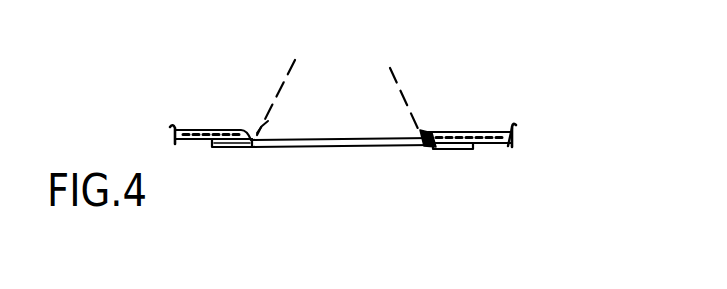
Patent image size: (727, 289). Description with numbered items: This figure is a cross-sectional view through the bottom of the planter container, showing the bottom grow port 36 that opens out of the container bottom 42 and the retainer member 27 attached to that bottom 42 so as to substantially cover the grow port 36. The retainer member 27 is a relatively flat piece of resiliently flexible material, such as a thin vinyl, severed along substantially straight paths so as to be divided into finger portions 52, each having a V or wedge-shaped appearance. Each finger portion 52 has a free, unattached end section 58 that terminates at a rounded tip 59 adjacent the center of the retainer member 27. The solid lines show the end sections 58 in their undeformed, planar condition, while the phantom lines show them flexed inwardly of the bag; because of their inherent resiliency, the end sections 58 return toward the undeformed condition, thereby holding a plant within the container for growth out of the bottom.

The retainer member 27 is at (430, 148).
The bottom grow port 36 is at (440, 148).
The bottom 42 is at (506, 144).
The finger portion 52 is at (254, 146).
The end section 58 is at (262, 128).
The tip 59 is at (293, 67).